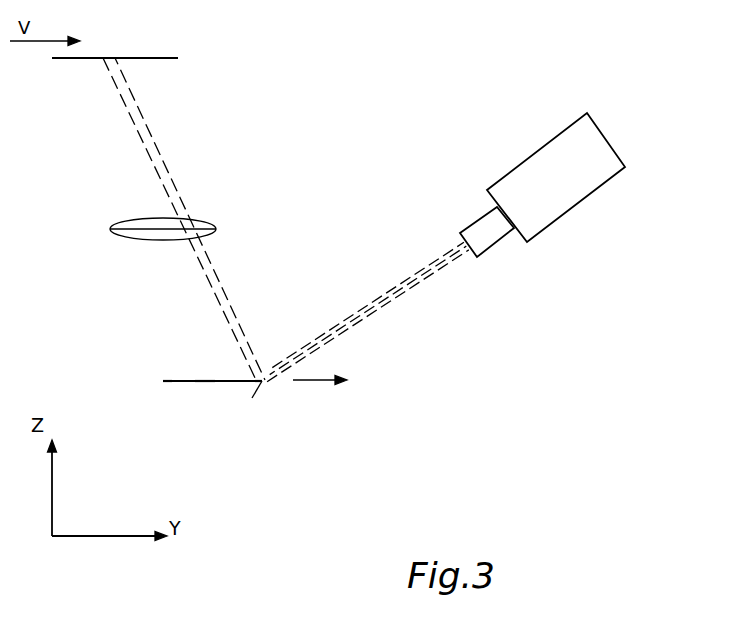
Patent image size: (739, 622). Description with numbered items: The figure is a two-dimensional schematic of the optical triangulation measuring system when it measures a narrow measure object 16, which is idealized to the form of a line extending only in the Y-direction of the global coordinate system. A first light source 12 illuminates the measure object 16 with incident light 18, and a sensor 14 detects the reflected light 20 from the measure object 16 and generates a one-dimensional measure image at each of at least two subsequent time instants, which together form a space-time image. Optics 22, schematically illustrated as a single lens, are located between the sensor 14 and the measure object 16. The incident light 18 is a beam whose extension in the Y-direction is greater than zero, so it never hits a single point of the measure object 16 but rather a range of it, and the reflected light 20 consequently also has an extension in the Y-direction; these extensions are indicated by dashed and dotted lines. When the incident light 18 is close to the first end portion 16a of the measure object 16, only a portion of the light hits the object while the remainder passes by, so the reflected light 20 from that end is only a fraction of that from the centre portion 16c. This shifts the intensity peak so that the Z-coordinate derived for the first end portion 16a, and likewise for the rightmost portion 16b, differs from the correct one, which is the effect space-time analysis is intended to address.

The first light source 12 is at (519, 188).
The sensor 14 is at (144, 58).
The measure object 16 is at (236, 407).
The first end portion 16a is at (147, 374).
The rightmost portion 16b is at (274, 392).
The centre portion 16c is at (205, 380).
The incident light 18 is at (404, 315).
The reflected light 20 is at (202, 286).
The optics 22 is at (132, 220).